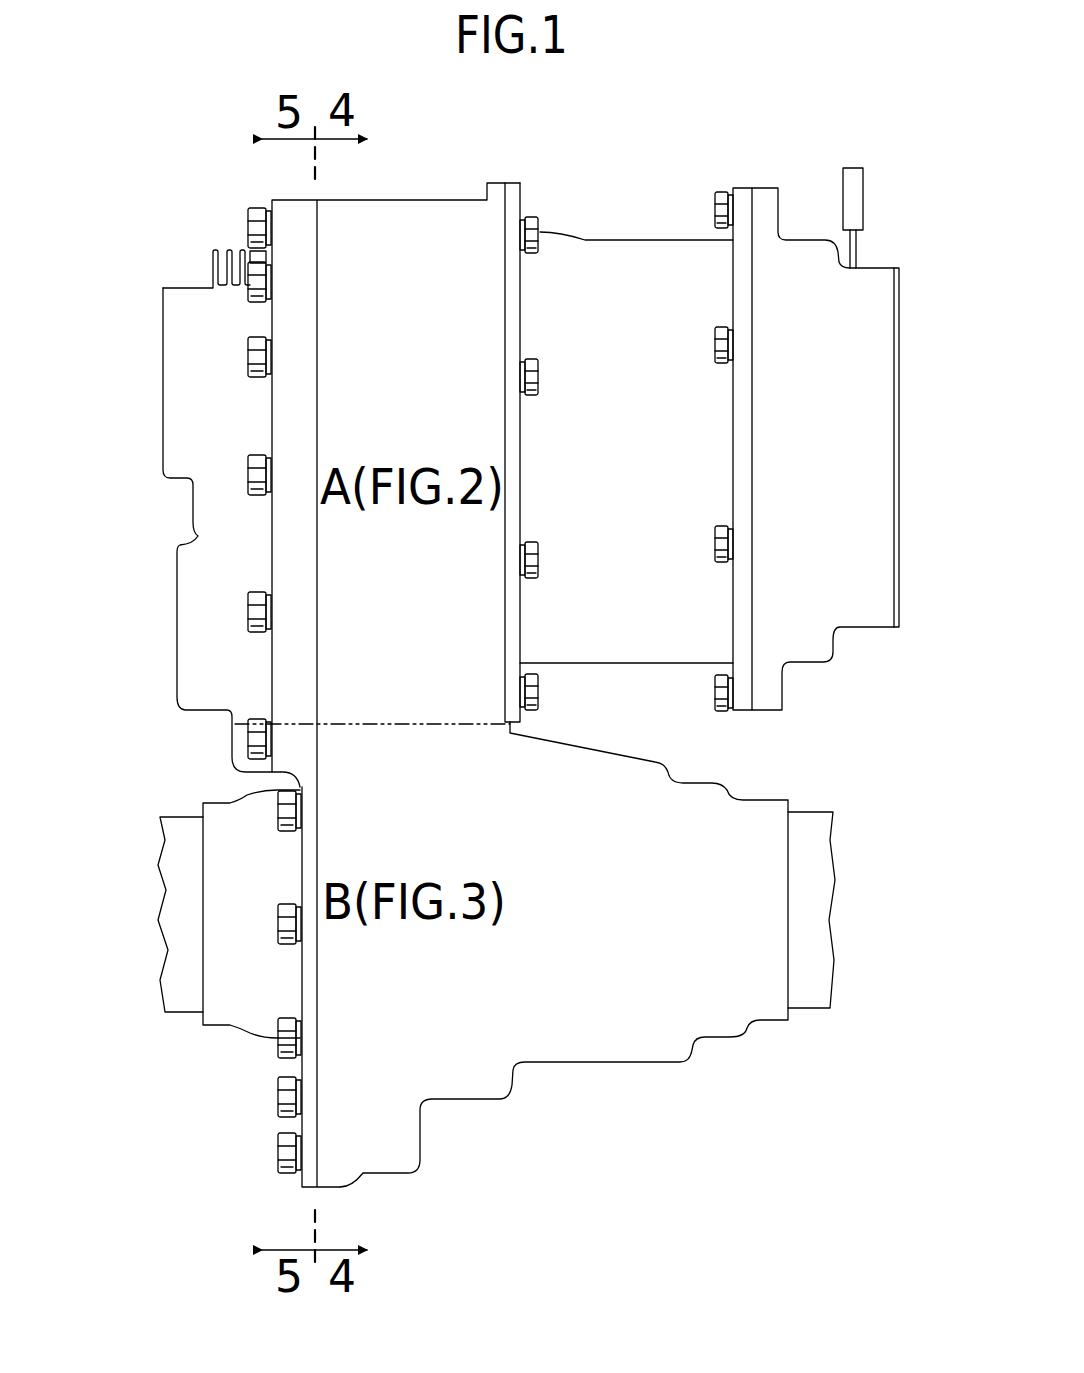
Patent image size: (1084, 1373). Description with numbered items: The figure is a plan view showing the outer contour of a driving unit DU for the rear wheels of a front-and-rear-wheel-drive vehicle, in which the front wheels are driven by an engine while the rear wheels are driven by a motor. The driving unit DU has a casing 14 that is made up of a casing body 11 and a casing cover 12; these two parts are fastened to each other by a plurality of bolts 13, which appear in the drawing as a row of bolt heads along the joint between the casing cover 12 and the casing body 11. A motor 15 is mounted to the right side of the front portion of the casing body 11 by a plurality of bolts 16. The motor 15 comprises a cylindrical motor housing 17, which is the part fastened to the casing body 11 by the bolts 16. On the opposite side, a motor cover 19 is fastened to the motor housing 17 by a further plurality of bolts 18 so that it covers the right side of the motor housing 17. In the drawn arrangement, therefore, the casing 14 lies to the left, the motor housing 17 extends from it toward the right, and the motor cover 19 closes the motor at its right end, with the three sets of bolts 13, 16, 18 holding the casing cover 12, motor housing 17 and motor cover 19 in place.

The casing body 11 is at (577, 1030).
The casing cover 12 is at (310, 1083).
The bolts 13 is at (252, 230).
The casing 14 is at (590, 1210).
The motor 15 is at (600, 236).
The bolts 16 is at (538, 232).
The motor housing 17 is at (637, 257).
The bolts 18 is at (715, 210).
The motor cover 19 is at (798, 653).
The driving unit DU is at (619, 1090).